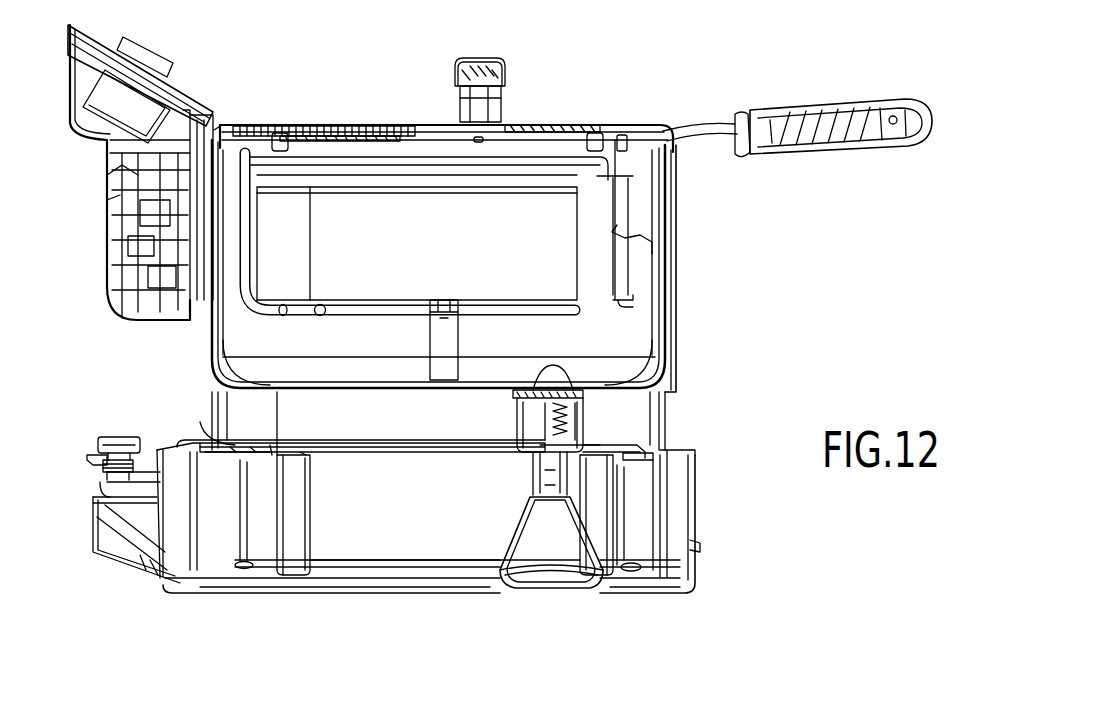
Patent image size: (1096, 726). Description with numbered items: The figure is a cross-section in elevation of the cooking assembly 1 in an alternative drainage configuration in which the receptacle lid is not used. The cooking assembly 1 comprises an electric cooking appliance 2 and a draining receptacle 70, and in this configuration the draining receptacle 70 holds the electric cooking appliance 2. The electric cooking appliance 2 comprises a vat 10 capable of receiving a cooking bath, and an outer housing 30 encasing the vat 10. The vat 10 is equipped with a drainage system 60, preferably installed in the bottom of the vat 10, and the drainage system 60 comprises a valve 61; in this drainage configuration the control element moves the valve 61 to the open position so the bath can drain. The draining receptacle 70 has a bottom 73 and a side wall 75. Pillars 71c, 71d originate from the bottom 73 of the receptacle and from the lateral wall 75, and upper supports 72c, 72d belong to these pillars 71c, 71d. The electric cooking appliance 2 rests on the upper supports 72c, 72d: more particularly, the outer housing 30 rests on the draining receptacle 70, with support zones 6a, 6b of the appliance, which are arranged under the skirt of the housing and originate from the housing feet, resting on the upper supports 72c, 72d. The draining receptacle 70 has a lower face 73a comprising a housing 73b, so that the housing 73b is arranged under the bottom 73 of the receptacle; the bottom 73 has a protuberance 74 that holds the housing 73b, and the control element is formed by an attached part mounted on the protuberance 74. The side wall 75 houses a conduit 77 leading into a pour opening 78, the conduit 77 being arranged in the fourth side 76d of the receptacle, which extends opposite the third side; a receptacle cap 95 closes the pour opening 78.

The cooking assembly 1 is at (803, 379).
The electric cooking appliance 2 is at (697, 213).
The vat 10 is at (663, 250).
The outer housing 30 is at (674, 311).
The draining receptacle 70 is at (680, 591).
The support zone 6a is at (588, 458).
The support zone 6b is at (293, 450).
The drainage system 60 is at (588, 420).
The valve 61 is at (570, 432).
The pillar 71c is at (292, 513).
The pillar 71d is at (596, 494).
The upper support 72c is at (280, 460).
The upper support 72d is at (591, 463).
The bottom of the receptacle 73 is at (397, 571).
The lower face 73a is at (352, 595).
The housing 73b is at (552, 570).
The protuberance 74 is at (589, 524).
The side wall 75 is at (464, 527).
The fourth side 76d is at (180, 538).
The conduit 77 is at (103, 508).
The pour opening 78 is at (108, 474).
The receptacle cap 95 is at (122, 437).